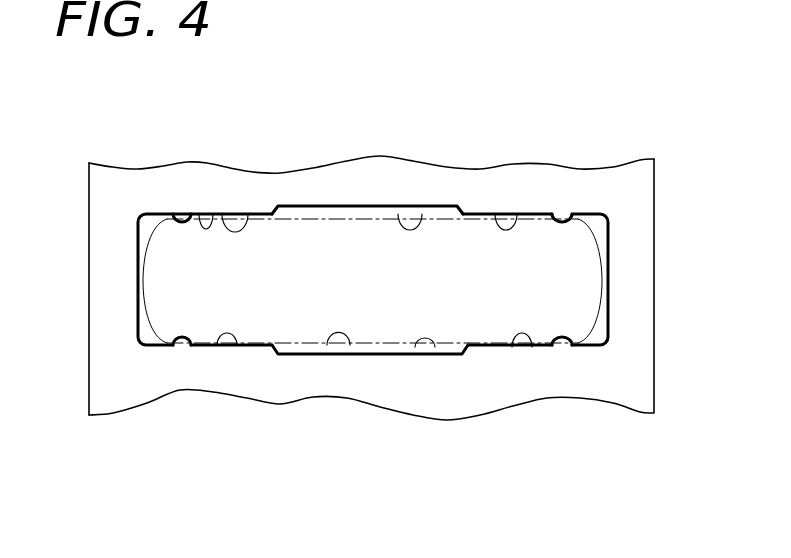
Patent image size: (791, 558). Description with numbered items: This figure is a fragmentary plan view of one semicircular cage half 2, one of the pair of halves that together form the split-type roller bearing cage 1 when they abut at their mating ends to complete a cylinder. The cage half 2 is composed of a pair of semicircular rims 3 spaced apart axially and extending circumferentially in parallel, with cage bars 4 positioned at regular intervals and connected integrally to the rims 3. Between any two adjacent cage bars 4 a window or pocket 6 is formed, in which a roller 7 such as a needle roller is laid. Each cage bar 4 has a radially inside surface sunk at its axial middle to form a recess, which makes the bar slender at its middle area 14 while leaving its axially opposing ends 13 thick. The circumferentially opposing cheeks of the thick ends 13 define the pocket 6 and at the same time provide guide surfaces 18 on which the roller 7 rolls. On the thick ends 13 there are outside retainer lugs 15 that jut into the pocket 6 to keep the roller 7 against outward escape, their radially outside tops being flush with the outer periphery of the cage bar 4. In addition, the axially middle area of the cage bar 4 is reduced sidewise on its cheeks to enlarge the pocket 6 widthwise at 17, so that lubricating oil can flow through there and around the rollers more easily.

The roller bearing cage 1 is at (366, 269).
The semicircular cage half 2 is at (366, 269).
The semicircular rim 3 is at (108, 277).
The cage bar 4 is at (373, 291).
The pocket 6 is at (247, 217).
The roller 7 is at (472, 310).
The thick end 13 is at (593, 192).
The middle area 14 is at (323, 186).
The outside retainer lug 15 is at (183, 212).
The enlarged portion of the pocket 17 is at (421, 212).
The guide surface 18 is at (203, 214).